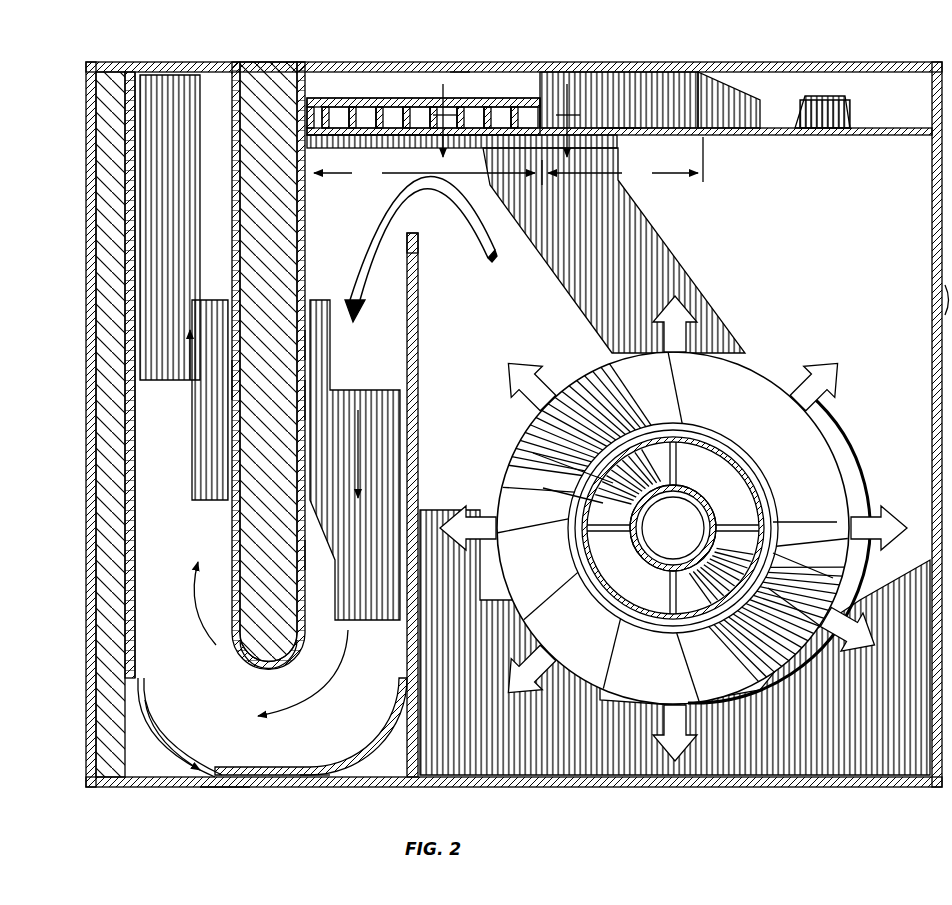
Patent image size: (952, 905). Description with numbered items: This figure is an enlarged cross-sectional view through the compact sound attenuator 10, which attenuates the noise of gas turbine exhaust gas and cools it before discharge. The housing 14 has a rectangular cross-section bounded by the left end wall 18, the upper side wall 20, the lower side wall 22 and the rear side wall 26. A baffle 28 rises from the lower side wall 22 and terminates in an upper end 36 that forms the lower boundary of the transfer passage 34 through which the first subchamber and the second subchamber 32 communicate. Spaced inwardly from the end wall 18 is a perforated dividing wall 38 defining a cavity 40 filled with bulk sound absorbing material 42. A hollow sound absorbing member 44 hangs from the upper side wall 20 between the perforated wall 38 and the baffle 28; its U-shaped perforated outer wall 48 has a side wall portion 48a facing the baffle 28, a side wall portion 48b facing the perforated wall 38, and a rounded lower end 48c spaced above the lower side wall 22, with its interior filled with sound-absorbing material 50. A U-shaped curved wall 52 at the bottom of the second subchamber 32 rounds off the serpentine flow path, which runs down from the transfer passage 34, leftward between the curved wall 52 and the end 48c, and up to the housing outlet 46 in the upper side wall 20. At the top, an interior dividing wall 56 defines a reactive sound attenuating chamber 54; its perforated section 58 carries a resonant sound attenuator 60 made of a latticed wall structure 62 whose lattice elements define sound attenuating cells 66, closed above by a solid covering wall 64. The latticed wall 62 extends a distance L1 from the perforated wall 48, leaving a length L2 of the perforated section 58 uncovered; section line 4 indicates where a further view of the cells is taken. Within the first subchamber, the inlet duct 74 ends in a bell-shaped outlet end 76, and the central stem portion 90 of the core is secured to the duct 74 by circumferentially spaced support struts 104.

The compact sound attenuator 10 is at (850, 800).
The housing 14 is at (222, 798).
The end wall 18 is at (80, 358).
The upper side wall 20 is at (702, 62).
The lower side wall 22 is at (716, 778).
The rear side wall 26 is at (817, 223).
The baffle member 28 is at (420, 312).
The second subchamber 32 is at (300, 745).
The transfer passage 34 is at (422, 160).
The upper end 36 is at (430, 212).
The perforated dividing wall 38 is at (136, 456).
The cavity 40 is at (110, 600).
The bulk sound absorbing material 42 is at (113, 668).
The hollow sound absorbing member 44 is at (320, 344).
The housing outlet 46 is at (217, 88).
The perforated outer wall section 48 is at (321, 552).
The side wall portion 48a is at (308, 398).
The side wall portion 48b is at (231, 380).
The rounded lower end 48c is at (270, 670).
The bulk sound-absorbing material 50 is at (279, 480).
The curved wall 52 is at (245, 766).
The reactive sound attenuating chamber 54 is at (842, 90).
The interior dividing wall 56 is at (828, 136).
The perforated section 58 is at (624, 112).
The resonant sound attenuator 60 is at (461, 88).
The latticed wall structure 62 is at (552, 113).
The covering wall 64 is at (480, 99).
The sound attenuating cells 66 is at (366, 108).
The inlet duct 74 is at (720, 444).
The bell-shaped outlet end 76 is at (697, 388).
The central stem portion 90 is at (712, 479).
The support struts 104 is at (687, 453).
The section line 4- 4 is at (506, 115).
The distance L1 is at (428, 174).
The length L2 is at (625, 162).